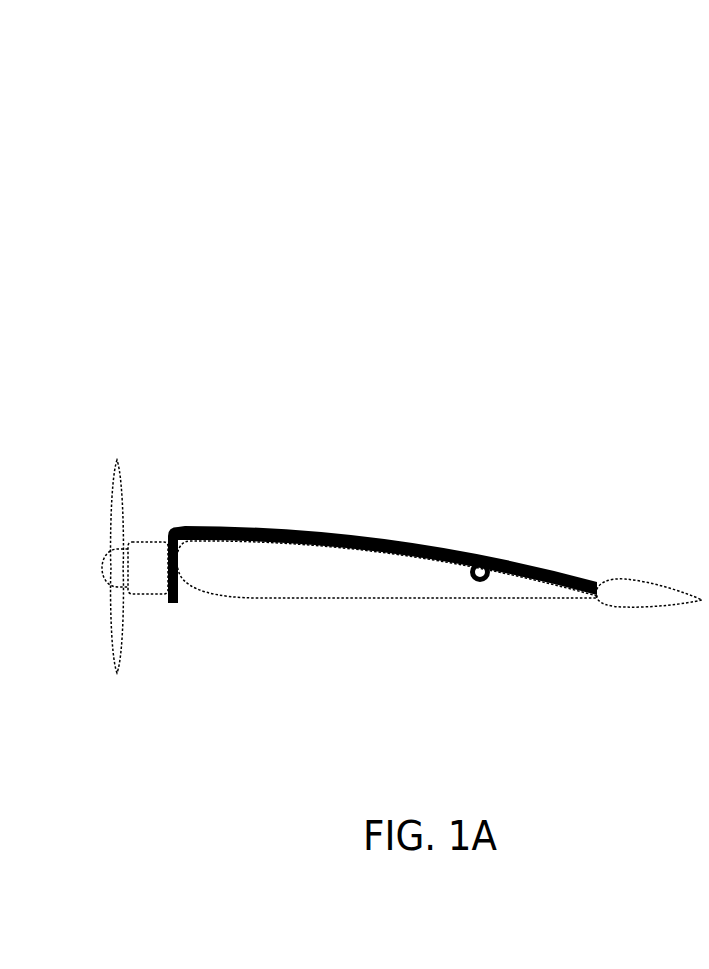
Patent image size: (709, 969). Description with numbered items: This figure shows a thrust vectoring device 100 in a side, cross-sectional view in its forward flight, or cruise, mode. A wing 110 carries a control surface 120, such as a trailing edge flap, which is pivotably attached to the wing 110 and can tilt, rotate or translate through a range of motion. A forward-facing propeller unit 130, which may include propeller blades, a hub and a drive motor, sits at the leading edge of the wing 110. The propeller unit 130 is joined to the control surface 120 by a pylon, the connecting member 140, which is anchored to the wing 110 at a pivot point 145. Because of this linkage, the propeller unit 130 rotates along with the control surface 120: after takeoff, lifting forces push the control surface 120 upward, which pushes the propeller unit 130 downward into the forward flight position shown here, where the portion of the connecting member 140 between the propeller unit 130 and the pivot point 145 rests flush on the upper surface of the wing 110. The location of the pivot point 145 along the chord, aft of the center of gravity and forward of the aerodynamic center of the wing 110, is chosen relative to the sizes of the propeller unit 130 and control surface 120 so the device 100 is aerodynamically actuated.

The thrust vectoring device 100 is at (370, 162).
The wing 110 is at (295, 618).
The control surface 120 is at (634, 564).
The propeller unit 130 is at (142, 503).
The connecting member 140 is at (299, 516).
The pivot point 145 is at (470, 582).